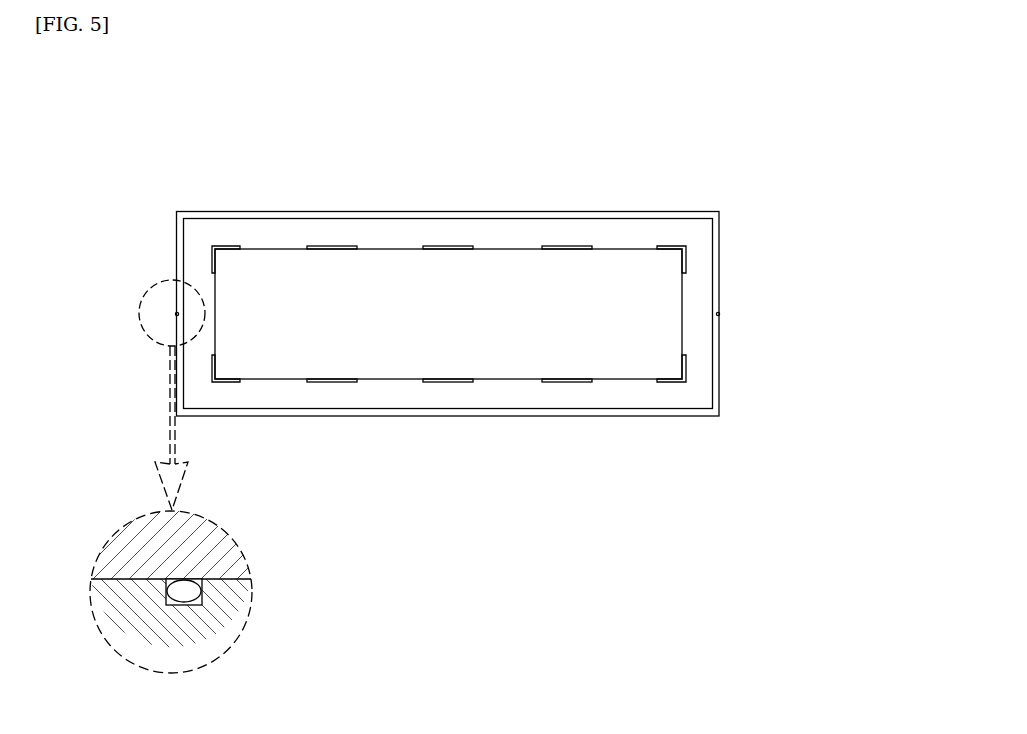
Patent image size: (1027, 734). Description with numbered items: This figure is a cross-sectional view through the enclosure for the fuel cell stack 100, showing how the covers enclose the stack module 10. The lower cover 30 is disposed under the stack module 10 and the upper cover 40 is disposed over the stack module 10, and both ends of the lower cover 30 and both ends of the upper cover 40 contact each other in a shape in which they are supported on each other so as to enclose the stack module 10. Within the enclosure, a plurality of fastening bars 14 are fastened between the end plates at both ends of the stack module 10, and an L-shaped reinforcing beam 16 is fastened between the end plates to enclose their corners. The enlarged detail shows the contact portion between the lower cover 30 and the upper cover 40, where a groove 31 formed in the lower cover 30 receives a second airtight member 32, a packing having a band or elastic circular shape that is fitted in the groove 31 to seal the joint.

The fuel cell stack 100 is at (449, 283).
The stack module 10 is at (385, 380).
The fastening bars 14 is at (331, 246).
The L-shaped reinforcing beam 16 is at (224, 246).
The lower cover 30 is at (470, 410).
The groove 31 is at (170, 588).
The second airtight member 32 is at (190, 590).
The upper cover 40 is at (590, 217).